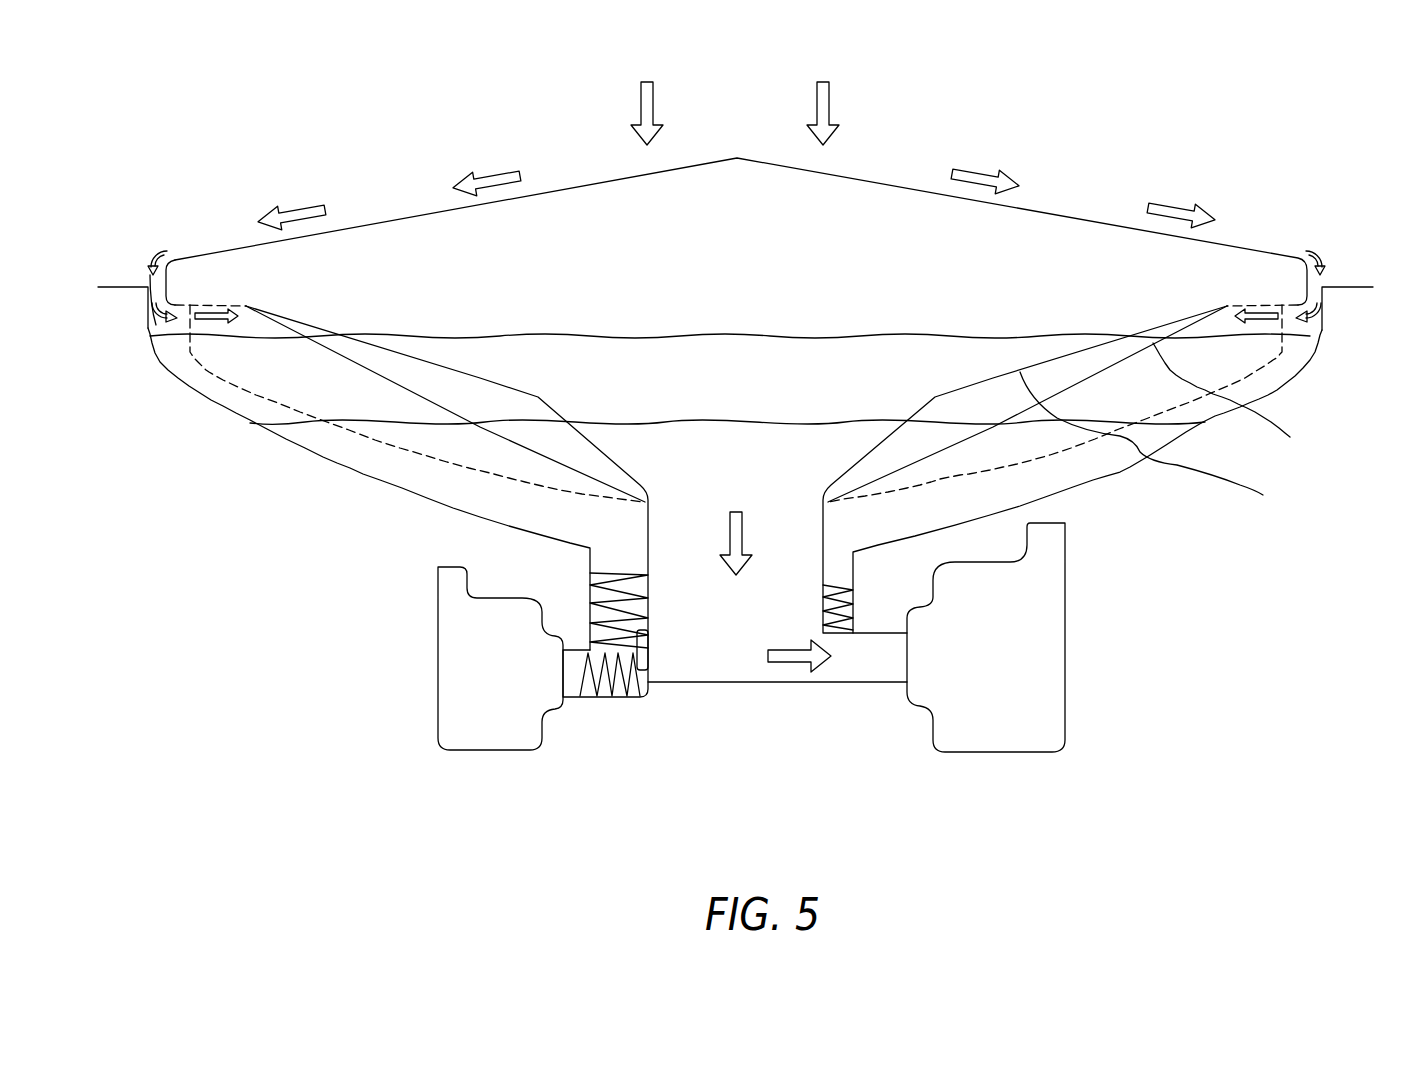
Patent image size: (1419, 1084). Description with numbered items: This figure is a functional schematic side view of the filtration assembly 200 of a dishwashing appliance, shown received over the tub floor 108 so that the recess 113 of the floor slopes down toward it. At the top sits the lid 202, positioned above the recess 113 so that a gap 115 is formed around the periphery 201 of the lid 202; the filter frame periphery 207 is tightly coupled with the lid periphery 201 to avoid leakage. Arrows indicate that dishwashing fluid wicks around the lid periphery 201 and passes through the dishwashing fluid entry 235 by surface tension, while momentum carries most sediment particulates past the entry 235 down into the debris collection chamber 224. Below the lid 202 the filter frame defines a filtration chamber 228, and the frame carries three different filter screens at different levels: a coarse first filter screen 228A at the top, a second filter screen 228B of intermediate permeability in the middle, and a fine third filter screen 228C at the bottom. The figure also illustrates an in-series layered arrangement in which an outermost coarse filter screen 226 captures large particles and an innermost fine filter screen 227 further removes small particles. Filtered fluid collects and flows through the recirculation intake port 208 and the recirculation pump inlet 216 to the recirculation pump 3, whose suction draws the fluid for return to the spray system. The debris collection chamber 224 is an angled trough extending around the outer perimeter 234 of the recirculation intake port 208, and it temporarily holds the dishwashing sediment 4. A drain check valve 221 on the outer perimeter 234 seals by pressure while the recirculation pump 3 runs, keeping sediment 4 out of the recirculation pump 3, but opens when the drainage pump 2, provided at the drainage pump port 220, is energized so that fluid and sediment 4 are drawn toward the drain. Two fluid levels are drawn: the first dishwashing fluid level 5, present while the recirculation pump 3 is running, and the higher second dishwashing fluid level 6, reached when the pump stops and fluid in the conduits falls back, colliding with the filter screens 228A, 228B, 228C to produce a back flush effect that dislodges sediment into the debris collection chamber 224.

The drainage pump 2 is at (453, 687).
The recirculation pump 3 is at (1043, 673).
The dishwashing sediment 4 is at (620, 687).
The first dishwashing fluid level 5 is at (857, 420).
The second dishwashing fluid level 6 is at (858, 337).
The tub floor 108 is at (1350, 290).
The recess 113 is at (353, 453).
The gap 115 is at (150, 276).
The filtration assembly 200 is at (748, 371).
The periphery of the lid 201 is at (1320, 270).
The lid 202 is at (736, 189).
The filter frame periphery 207 is at (1302, 368).
The recirculation intake port 208 is at (1037, 481).
The recirculation pump inlet 216 is at (907, 663).
The drainage pump port 220 is at (563, 678).
The drain check valve 221 is at (647, 647).
The debris collection chamber 224 is at (613, 565).
The coarse filter screen 226 is at (227, 377).
The fine filter screen 227 is at (403, 380).
The filtration chamber 228 is at (912, 358).
The first filter screen 228A is at (1284, 243).
The second filter screen 228B is at (1150, 446).
The third filter screen 228C is at (877, 442).
The outer perimeter of the recirculation intake port 234 is at (650, 617).
The dishwashing fluid entry 235 is at (187, 318).